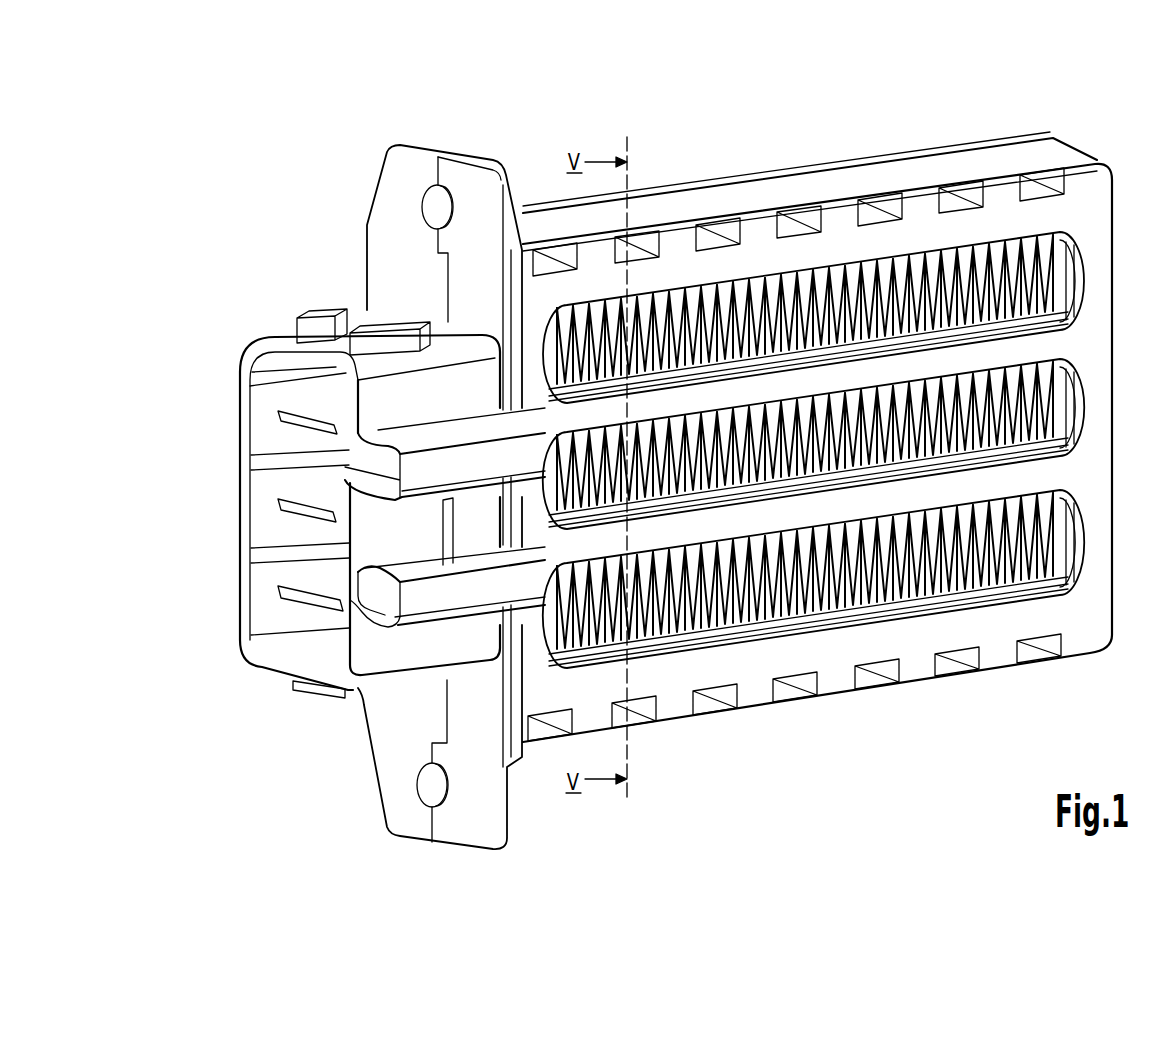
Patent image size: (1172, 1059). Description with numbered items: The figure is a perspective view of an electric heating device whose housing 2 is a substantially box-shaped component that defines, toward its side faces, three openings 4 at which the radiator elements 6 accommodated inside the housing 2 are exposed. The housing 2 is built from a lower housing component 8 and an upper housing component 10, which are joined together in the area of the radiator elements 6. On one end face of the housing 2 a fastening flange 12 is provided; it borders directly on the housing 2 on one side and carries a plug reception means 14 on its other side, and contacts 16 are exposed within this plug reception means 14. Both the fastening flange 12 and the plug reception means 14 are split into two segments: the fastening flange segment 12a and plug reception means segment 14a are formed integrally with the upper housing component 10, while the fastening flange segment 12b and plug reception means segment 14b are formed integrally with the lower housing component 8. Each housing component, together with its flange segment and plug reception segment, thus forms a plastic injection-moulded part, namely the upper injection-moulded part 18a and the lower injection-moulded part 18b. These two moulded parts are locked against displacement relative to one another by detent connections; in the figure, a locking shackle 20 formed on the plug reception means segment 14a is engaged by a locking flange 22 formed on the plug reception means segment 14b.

The housing 2 is at (836, 427).
The openings 4 is at (1023, 232).
The radiator elements 6 is at (1065, 488).
The lower housing component 8 is at (727, 190).
The upper housing component 10 is at (834, 195).
The fastening flange 12 is at (433, 467).
The fastening flange segment 12a is at (388, 152).
The fastening flange segment 12b is at (478, 168).
The plug reception means 14 is at (354, 510).
The plug reception means segment 14a is at (262, 660).
The plug reception means segment 14b is at (367, 714).
The contacts 16 is at (280, 414).
The injection-moulded part 18a is at (911, 143).
The injection-moulded part 18b is at (1088, 656).
The locking shackle 20 is at (316, 314).
The locking flange 22 is at (372, 321).